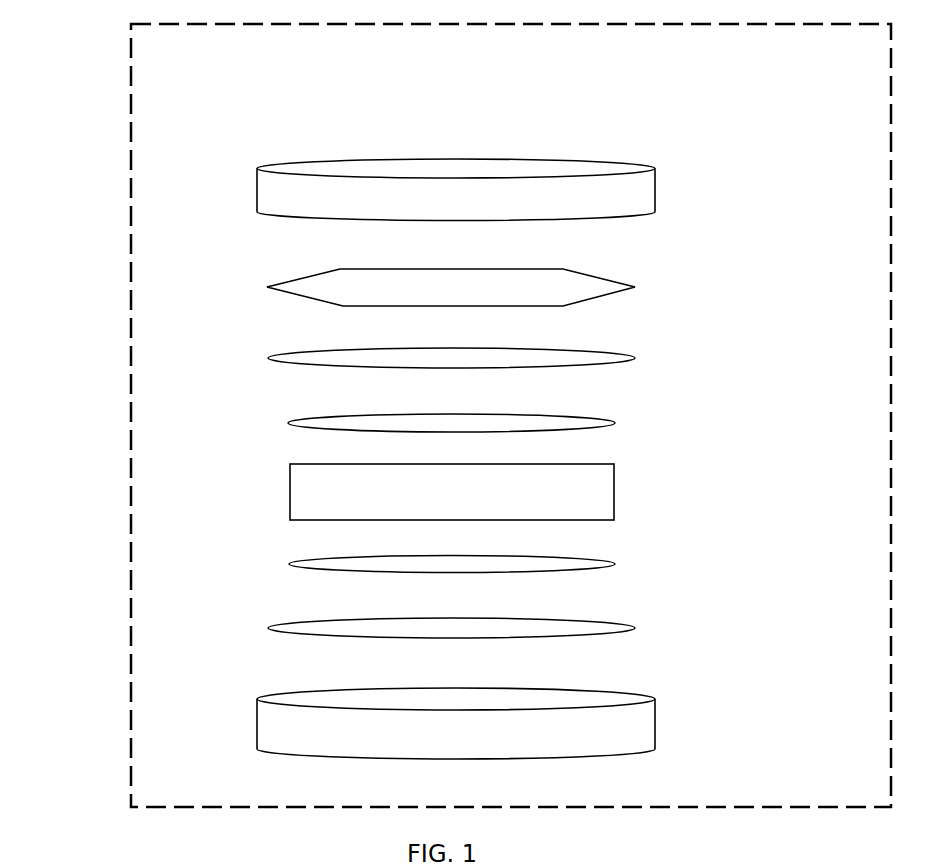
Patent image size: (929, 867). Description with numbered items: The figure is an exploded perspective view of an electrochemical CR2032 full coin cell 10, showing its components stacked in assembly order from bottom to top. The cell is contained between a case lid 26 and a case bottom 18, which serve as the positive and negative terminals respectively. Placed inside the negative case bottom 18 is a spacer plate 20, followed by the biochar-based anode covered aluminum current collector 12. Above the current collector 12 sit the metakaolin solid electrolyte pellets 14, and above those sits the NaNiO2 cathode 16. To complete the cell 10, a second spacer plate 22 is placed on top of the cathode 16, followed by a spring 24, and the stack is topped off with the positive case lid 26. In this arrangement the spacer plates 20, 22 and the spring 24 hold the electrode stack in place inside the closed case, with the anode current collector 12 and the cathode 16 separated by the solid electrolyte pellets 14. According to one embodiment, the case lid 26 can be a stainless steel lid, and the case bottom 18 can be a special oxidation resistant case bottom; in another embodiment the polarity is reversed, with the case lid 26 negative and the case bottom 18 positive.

The cell 10 is at (722, 121).
The biochar-based anode covered aluminum current collector 12 is at (569, 564).
The metakaolin solid electrolyte pellets 14 is at (582, 508).
The NaNiO2 cathode 16 is at (582, 423).
The case bottom 18 is at (635, 740).
The spacer plate 20 is at (592, 627).
The second spacer plate 22 is at (592, 358).
The spring 24 is at (595, 290).
The case lid 26 is at (635, 203).